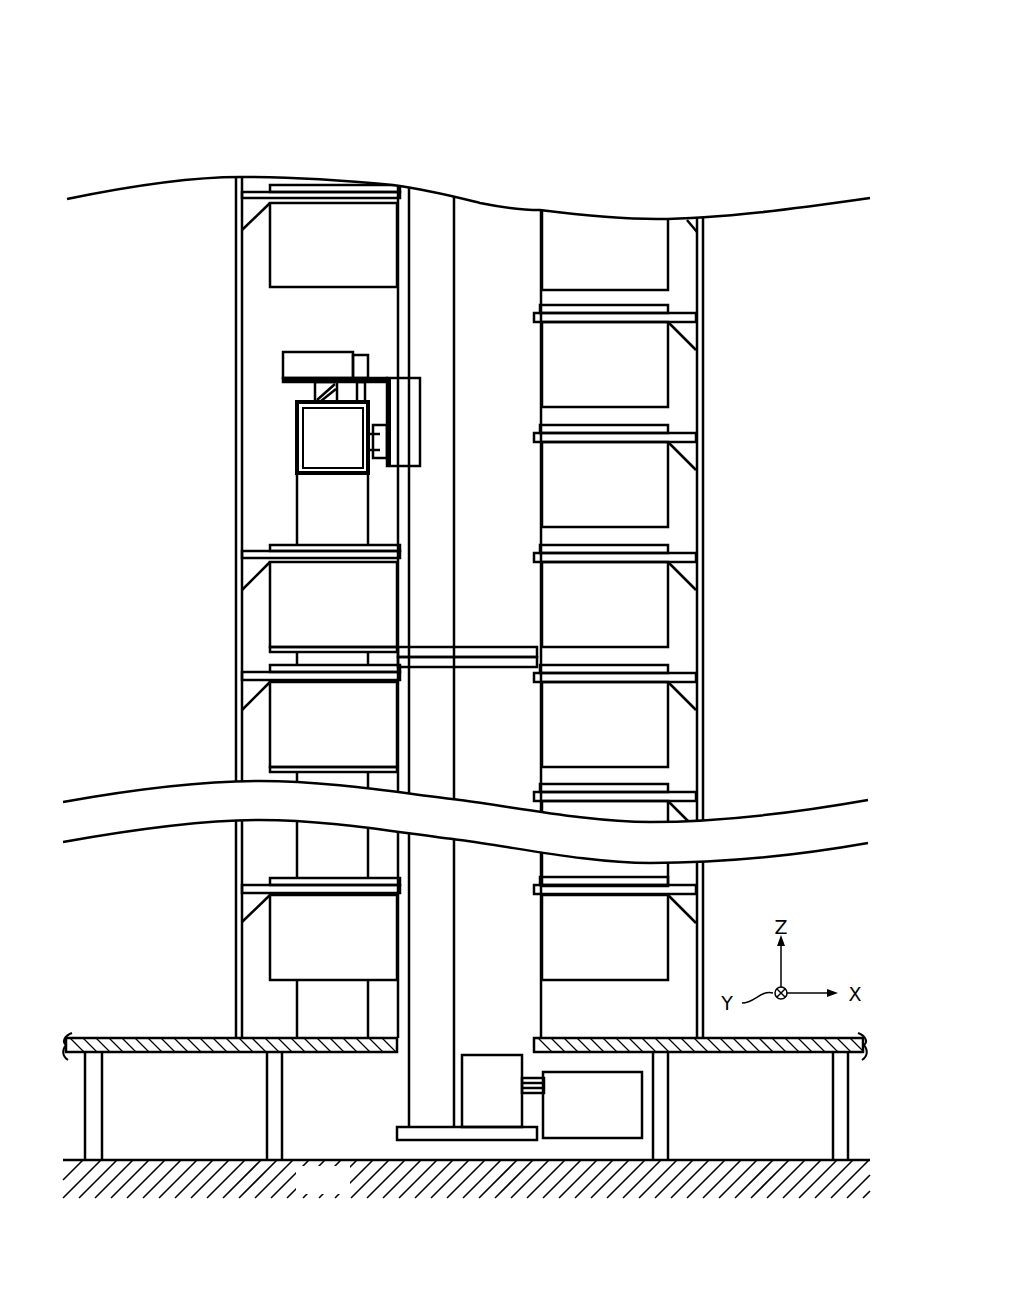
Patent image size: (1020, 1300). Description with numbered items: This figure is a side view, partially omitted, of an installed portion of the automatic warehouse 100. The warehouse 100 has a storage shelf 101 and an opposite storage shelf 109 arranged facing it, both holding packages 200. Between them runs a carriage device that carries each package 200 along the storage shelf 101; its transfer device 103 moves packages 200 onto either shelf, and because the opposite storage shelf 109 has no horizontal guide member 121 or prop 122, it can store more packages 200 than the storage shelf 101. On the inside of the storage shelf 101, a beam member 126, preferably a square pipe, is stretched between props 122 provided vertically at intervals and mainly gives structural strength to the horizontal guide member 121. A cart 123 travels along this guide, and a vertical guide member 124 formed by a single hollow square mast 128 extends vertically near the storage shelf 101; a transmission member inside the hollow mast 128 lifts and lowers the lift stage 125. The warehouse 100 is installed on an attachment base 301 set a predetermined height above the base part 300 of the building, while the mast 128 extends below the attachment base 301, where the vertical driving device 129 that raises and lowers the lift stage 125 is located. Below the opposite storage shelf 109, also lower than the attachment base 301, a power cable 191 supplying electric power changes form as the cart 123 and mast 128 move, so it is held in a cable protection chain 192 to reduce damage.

The automatic warehouse 100 is at (510, 621).
The storage shelf 101 is at (237, 272).
The opposite storage shelf 109 is at (705, 292).
The vertical guide member 124 is at (433, 232).
The mast 128 is at (432, 497).
The transfer device 103 is at (477, 645).
The lift stage 125 is at (492, 669).
The package 200 is at (318, 611).
The horizontal guide member 121 is at (297, 436).
The prop 122 is at (322, 502).
The cart 123 is at (388, 378).
The beam member 126 is at (297, 411).
The vertical driving device 129 is at (490, 1053).
The power cable 191 is at (535, 1097).
The cable protection chain 192 is at (598, 1122).
The base part 300 is at (301, 1194).
The attachment base 301 is at (128, 1037).